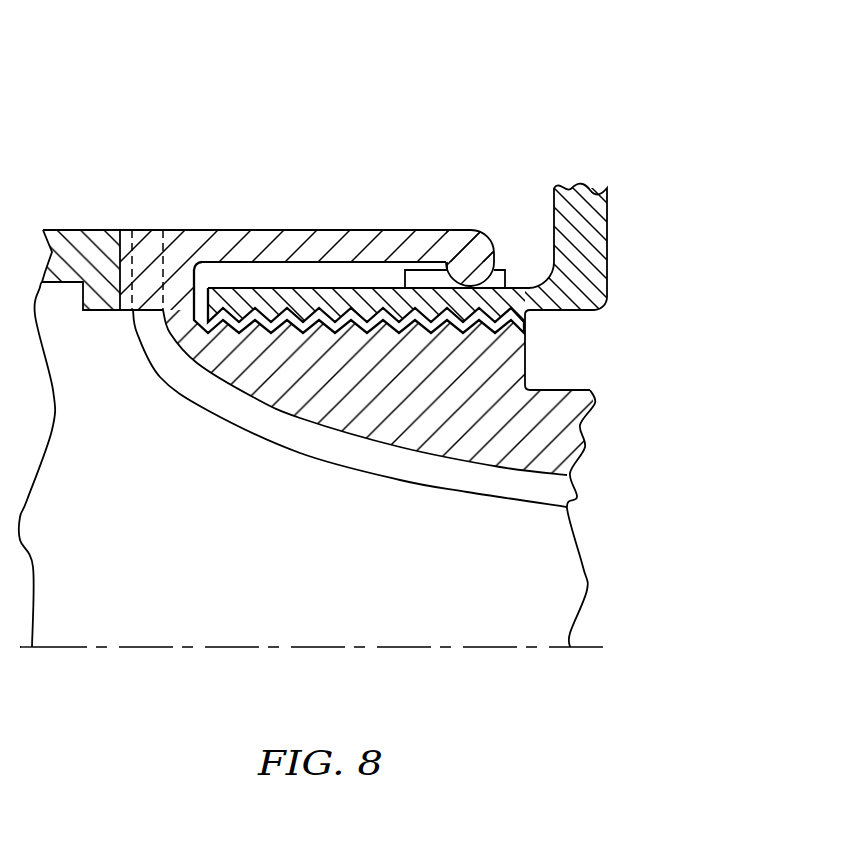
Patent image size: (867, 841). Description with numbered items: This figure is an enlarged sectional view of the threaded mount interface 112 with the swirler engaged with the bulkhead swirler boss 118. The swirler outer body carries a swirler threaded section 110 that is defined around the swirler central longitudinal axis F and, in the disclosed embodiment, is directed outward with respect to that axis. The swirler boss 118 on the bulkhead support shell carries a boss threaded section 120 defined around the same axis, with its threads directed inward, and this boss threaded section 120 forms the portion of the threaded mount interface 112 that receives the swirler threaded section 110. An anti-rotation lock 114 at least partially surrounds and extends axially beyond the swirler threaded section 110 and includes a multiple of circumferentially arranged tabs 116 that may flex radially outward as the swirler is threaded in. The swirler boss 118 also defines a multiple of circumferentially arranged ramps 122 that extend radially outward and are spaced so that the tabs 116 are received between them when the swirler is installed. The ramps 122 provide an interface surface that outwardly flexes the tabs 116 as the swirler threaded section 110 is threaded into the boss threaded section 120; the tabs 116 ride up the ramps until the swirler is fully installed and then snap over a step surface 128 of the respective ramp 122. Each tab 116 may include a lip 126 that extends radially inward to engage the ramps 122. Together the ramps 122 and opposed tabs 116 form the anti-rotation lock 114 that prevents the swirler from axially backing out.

The swirler threaded section 110 is at (380, 328).
The threaded mount interface 112 is at (508, 106).
The anti-rotation lock 114 is at (216, 217).
The circumferentially arranged tabs 116 is at (328, 238).
The swirler boss 118 is at (628, 236).
The boss threaded section 120 is at (302, 317).
The circumferentially arranged ramps 122 is at (377, 268).
The lip 126 is at (477, 262).
The step surface 128 is at (436, 280).